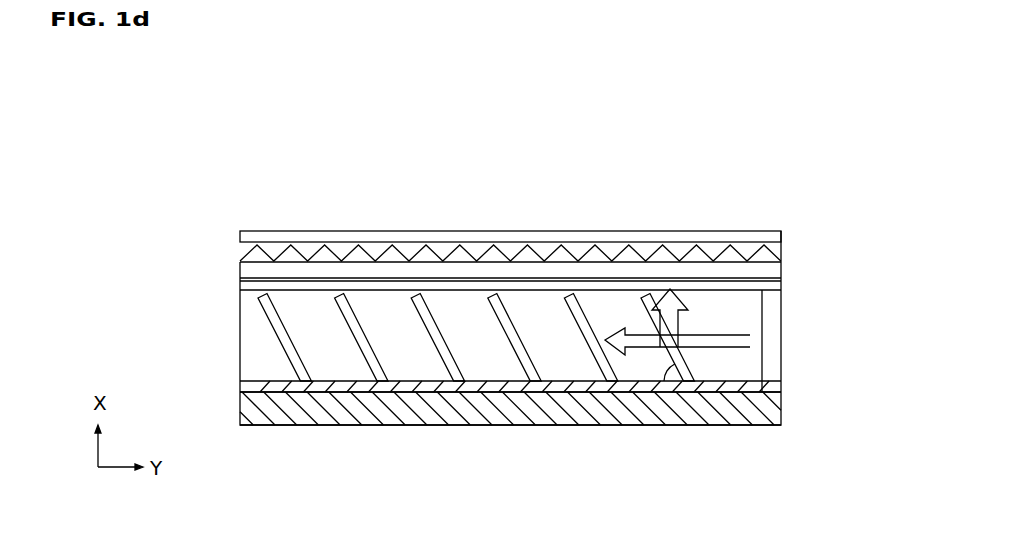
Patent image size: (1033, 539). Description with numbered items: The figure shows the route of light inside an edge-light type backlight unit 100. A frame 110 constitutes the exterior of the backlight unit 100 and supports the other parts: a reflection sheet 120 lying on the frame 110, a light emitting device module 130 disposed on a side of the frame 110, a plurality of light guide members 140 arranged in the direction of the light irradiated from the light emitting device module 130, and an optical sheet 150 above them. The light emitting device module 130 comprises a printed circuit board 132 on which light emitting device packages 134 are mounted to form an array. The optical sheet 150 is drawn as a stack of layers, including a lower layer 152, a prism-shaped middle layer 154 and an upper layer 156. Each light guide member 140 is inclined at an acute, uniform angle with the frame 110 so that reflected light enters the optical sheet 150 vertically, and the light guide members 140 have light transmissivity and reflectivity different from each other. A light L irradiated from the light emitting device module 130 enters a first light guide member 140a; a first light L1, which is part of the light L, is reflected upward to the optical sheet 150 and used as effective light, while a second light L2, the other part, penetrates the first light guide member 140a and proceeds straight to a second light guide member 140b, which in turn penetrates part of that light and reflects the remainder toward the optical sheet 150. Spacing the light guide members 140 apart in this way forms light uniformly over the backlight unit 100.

The backlight unit 100 is at (845, 145).
The frame 110 is at (265, 417).
The reflection sheet 120 is at (265, 387).
The light emitting device module 130 is at (867, 288).
The printed circuit board 132 is at (750, 362).
The light emitting device packages 134 is at (750, 322).
The light guide members 140 is at (437, 333).
The first light guide member 140a is at (645, 300).
The second light guide member 140b is at (565, 297).
The optical sheet 150 is at (150, 168).
The optical layer 152 is at (243, 285).
The prism layer 154 is at (240, 258).
The upper plate 156 is at (240, 237).
The light L is at (722, 343).
The first light L1 is at (670, 290).
The second light L2 is at (647, 343).